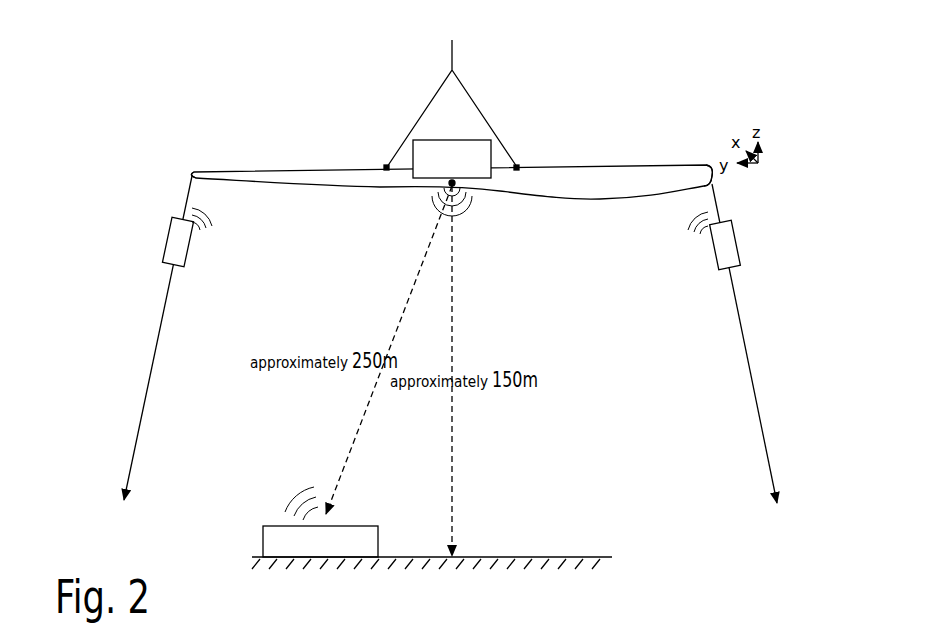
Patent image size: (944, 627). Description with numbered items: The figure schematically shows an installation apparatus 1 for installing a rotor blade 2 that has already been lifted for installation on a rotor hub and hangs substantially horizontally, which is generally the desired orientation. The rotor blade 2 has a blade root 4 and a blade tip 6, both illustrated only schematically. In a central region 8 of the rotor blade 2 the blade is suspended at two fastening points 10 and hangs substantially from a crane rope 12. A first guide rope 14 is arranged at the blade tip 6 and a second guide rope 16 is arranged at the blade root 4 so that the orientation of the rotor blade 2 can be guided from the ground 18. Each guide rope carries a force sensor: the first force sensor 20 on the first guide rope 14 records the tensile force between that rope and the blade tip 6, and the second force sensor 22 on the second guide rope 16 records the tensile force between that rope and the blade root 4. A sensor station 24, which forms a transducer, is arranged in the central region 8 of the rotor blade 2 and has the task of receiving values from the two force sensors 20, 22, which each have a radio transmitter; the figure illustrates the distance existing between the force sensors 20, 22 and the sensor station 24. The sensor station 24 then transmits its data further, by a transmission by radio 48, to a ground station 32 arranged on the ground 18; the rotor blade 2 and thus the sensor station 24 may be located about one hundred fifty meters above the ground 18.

The installation apparatus 1 is at (678, 67).
The rotor blade 2 is at (573, 170).
The blade root 4 is at (705, 160).
The blade tip 6 is at (192, 172).
The central region 8 is at (493, 210).
The fastening points 10 is at (385, 167).
The crane rope 12 is at (453, 57).
The first guide rope 14 is at (156, 351).
The second guide rope 16 is at (748, 356).
The ground 18 is at (528, 556).
The first force sensor 20 is at (165, 238).
The second force sensor 22 is at (739, 240).
The sensor station 24 is at (454, 138).
The ground station 32 is at (355, 525).
The transmission by radio 48 is at (412, 286).